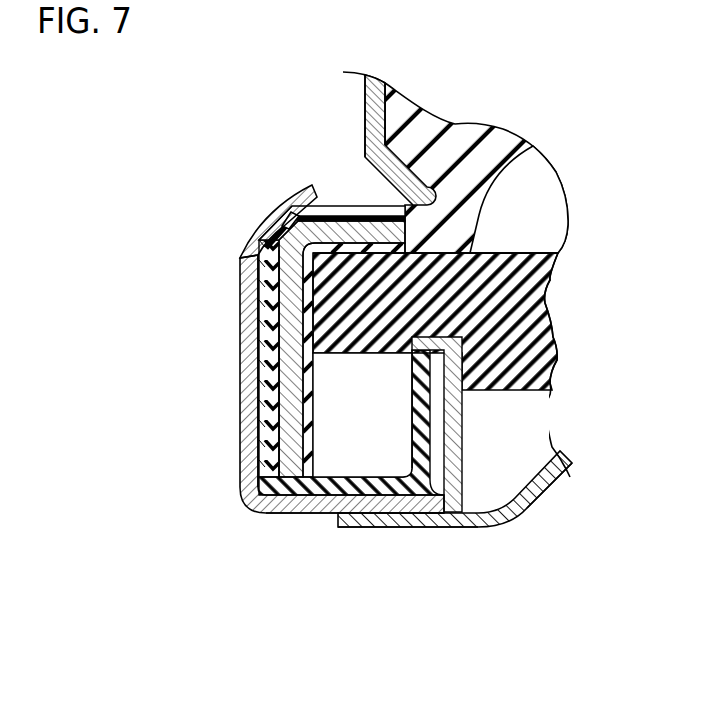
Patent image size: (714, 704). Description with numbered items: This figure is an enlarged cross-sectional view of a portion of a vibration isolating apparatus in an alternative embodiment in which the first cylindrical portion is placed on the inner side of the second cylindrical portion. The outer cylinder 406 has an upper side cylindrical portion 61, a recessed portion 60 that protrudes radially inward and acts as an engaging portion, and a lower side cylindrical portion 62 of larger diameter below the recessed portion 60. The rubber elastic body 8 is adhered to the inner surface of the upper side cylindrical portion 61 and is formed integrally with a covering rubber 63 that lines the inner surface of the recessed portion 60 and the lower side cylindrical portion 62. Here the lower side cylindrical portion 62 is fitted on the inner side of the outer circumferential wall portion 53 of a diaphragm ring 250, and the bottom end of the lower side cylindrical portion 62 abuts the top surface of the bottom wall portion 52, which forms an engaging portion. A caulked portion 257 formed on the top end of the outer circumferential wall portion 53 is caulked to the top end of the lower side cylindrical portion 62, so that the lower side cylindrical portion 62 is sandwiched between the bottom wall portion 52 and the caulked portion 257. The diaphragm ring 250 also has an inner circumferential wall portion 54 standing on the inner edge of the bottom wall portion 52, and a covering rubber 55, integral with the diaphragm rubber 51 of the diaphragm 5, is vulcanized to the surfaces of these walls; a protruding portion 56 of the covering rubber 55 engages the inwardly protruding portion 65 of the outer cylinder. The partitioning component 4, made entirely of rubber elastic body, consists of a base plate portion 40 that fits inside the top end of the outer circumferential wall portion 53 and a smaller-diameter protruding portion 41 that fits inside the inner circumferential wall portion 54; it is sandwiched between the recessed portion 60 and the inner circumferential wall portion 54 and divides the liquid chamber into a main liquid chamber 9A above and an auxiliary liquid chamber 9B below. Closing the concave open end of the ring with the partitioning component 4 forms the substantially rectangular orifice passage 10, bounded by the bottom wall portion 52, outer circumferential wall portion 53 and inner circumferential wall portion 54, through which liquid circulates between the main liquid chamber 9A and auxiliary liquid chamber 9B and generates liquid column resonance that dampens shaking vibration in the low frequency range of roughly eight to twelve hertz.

The partitioning component 4 is at (523, 253).
The diaphragm 5 is at (552, 622).
The rubber elastic body 8 is at (390, 140).
The main liquid chamber 9A is at (547, 203).
The auxiliary liquid chamber 9B is at (505, 435).
The orifice passage 10 is at (373, 417).
The base plate portion 40 is at (393, 268).
The protruding portion 41 is at (522, 377).
The diaphragm rubber 51 is at (521, 514).
The bottom wall portion 52 is at (310, 513).
The outer circumferential wall portion 53 is at (248, 395).
The inner circumferential wall portion 54 is at (438, 432).
The covering rubber 55 is at (257, 425).
The protruding portion 56 is at (279, 218).
The recessed portion 60 is at (455, 190).
The upper side cylindrical portion 61 is at (364, 98).
The lower side cylindrical portion 62 is at (293, 358).
The covering rubber 63 is at (300, 337).
The inwardly protruding portion 65 is at (287, 215).
The diaphragm ring 250 is at (410, 532).
The caulked portion 257 is at (282, 215).
The outer cylinder 406 is at (278, 372).